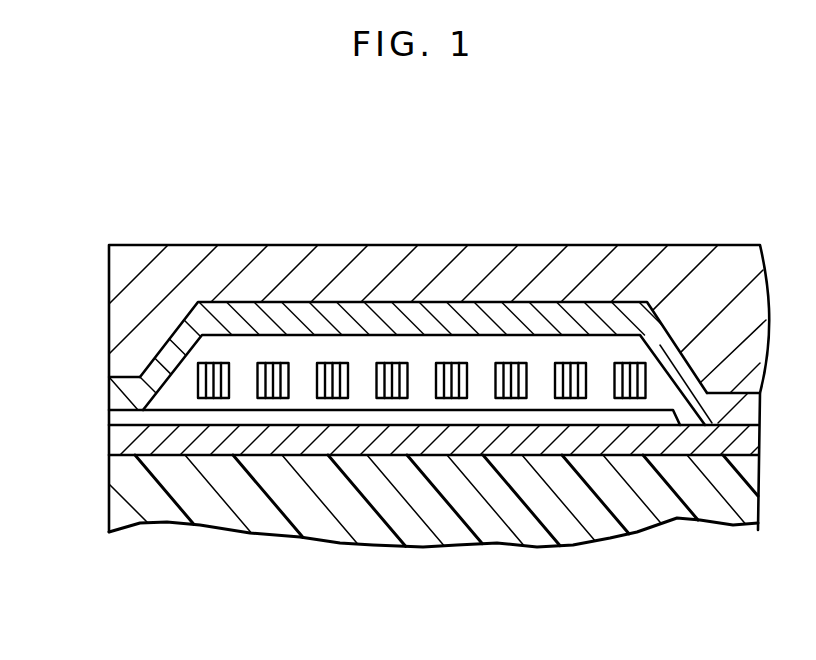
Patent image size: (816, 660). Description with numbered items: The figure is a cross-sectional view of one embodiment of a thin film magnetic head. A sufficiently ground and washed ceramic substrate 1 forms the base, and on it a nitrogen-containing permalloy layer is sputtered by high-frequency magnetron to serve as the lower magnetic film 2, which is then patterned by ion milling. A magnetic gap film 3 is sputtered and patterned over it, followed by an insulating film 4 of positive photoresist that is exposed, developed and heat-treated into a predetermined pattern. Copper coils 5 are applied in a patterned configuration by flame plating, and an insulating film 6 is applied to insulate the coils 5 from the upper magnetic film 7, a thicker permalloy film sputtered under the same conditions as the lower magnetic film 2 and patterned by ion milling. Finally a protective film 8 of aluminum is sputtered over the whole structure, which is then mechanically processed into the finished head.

The ceramic substrate 1 is at (325, 528).
The lower magnetic film 2 is at (118, 440).
The magnetic gap film 3 is at (118, 412).
The insulating film 4 is at (602, 400).
The coils 5 is at (565, 368).
The insulating film 6 is at (385, 345).
The upper magnetic film 7 is at (320, 305).
The protective film 8 is at (248, 252).